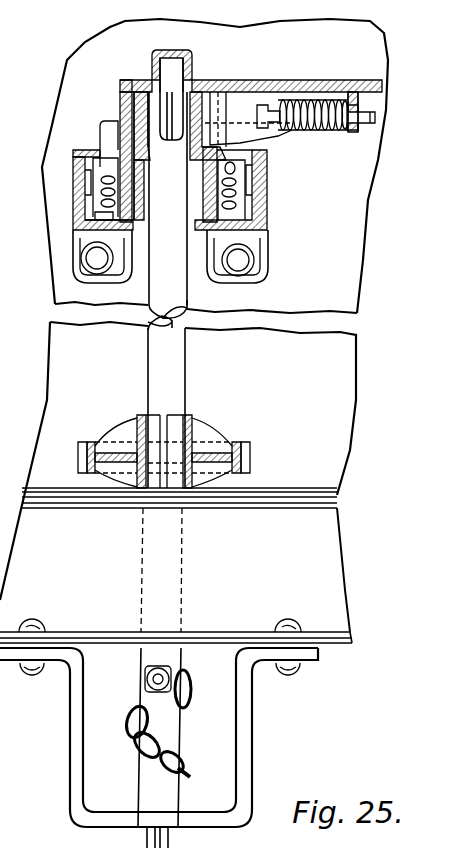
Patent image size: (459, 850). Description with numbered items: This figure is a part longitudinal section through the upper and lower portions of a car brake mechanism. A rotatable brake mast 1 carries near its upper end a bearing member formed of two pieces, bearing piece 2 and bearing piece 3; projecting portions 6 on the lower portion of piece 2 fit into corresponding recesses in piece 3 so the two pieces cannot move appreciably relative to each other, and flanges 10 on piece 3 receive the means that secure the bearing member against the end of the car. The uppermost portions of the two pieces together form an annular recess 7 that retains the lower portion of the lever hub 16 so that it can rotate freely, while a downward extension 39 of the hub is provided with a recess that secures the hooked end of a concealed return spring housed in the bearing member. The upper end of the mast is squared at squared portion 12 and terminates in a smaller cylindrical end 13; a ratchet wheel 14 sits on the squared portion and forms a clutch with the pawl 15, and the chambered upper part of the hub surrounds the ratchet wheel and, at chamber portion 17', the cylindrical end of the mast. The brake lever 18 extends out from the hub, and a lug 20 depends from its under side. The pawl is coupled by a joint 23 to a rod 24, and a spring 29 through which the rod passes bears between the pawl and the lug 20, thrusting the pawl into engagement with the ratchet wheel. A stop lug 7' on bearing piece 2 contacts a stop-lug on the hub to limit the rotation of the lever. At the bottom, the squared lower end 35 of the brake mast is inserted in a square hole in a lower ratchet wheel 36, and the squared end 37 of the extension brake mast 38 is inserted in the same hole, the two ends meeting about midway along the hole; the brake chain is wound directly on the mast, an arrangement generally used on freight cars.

The brake mast 1 is at (162, 453).
The bearing piece 2 is at (263, 223).
The bearing piece 3 is at (263, 172).
The projecting portions 6 is at (87, 200).
The annular recess 7 is at (84, 189).
The stop lug 7' is at (93, 144).
The flanges 10 is at (78, 258).
The squared portion 12 is at (160, 122).
The cylindrical end 13 is at (166, 63).
The ratchet wheel 14 is at (120, 90).
The pawl 15 is at (243, 102).
The hub 16 is at (128, 81).
The chamber portion 17' is at (251, 62).
The brake lever 18 is at (341, 86).
The lug 20 is at (353, 133).
The joint 23 is at (268, 110).
The rod 24 is at (375, 117).
The spring 29 is at (302, 131).
The lower end of brake mast 35 is at (157, 437).
The ratchet wheel 36 is at (80, 442).
The end of extension brake mast 37 is at (173, 477).
The extension brake mast 38 is at (147, 700).
The downward extension of hub 39 is at (72, 228).